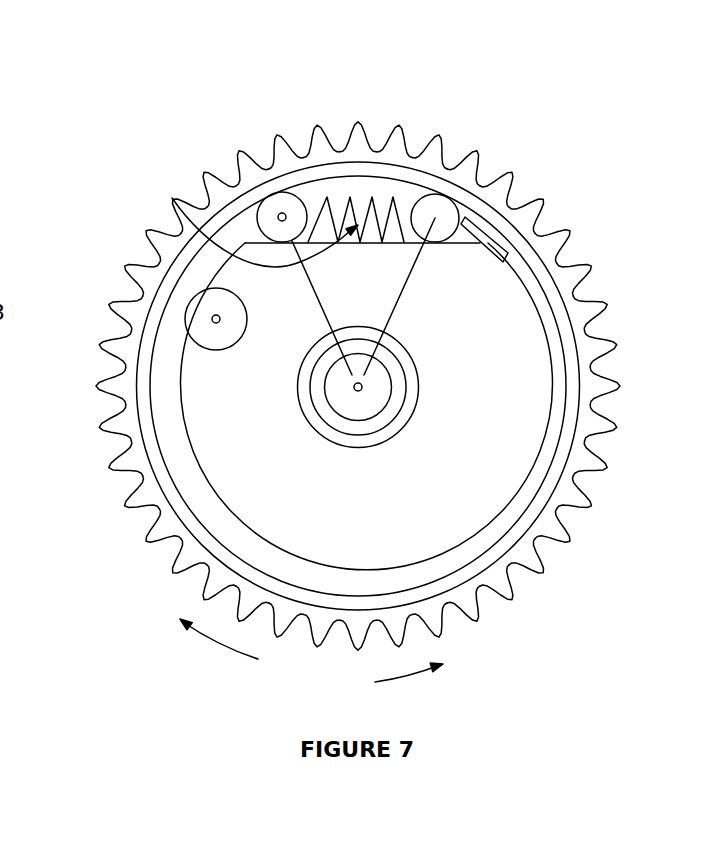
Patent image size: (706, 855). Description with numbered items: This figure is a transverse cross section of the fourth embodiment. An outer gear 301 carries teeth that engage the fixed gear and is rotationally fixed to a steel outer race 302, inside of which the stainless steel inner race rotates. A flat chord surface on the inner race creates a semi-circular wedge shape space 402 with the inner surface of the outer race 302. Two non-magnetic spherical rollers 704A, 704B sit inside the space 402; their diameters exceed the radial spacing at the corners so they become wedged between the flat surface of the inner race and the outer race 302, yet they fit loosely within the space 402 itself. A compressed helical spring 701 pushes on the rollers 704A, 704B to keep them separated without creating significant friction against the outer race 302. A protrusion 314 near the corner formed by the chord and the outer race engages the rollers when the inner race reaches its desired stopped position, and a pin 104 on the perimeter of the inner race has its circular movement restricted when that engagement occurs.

The outer gear 301 is at (543, 200).
The outer race 302 is at (562, 274).
The spherical roller 704A is at (281, 192).
The spherical roller 704B is at (436, 194).
The semi-circular wedge shape space 402 is at (362, 195).
The protrusion 314 is at (478, 213).
The helical spring 701 is at (172, 198).
The pin 104 is at (182, 313).